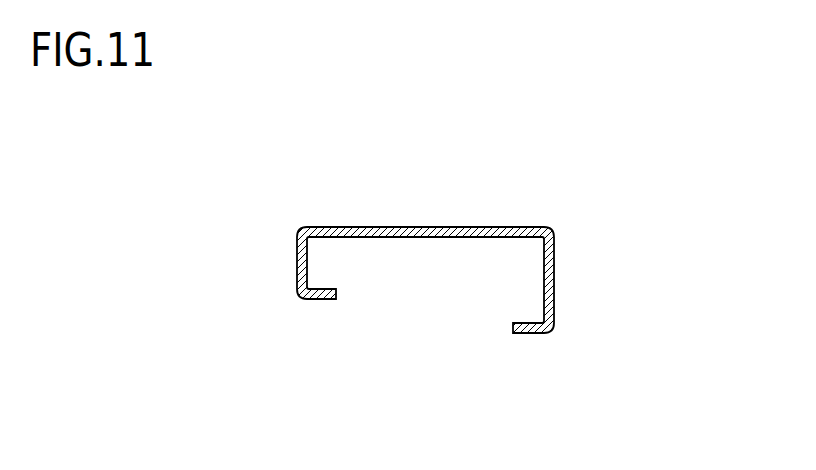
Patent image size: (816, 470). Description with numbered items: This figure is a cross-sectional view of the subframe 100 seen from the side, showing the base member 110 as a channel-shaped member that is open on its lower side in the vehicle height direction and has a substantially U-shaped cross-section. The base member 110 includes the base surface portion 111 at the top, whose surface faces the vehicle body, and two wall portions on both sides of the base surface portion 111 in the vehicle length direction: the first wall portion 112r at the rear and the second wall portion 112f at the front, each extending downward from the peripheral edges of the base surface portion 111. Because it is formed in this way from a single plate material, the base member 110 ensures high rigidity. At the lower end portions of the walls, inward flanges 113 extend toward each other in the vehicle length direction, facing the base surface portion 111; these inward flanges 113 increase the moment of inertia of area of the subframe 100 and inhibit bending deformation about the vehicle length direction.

The subframe 100 is at (408, 235).
The base member 110 is at (408, 235).
The base surface portion 111 is at (447, 227).
The first wall portion 112r is at (297, 271).
The second wall portion 112f is at (553, 277).
The inward flanges 113 is at (322, 299).